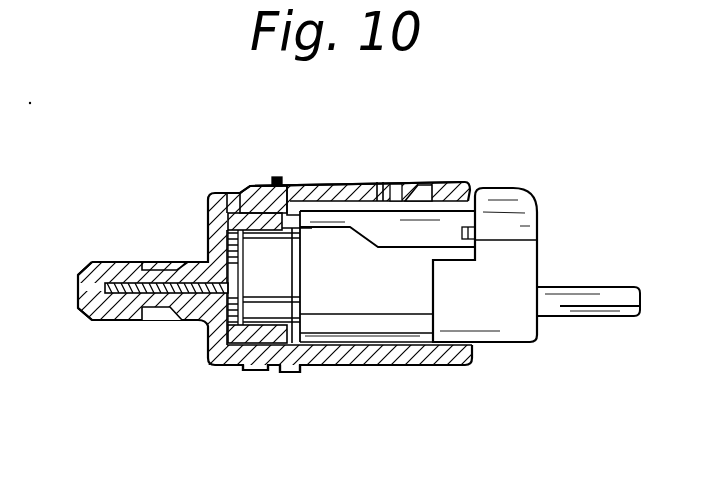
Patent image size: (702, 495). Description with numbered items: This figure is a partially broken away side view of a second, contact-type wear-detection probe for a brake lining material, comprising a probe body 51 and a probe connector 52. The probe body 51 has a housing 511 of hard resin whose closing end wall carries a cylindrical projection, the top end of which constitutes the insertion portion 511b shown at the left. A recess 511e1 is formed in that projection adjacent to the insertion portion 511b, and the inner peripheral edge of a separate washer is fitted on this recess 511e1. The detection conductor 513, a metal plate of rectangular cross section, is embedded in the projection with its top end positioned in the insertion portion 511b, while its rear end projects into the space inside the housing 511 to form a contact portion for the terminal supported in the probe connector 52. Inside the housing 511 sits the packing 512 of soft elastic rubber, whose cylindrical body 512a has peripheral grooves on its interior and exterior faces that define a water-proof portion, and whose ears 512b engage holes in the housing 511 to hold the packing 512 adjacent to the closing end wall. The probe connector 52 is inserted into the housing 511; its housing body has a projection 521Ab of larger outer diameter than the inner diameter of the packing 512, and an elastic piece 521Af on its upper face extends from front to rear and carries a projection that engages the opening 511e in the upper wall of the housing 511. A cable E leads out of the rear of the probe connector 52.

The probe body 51 is at (344, 176).
The housing 511 is at (430, 366).
The insertion portion 511b is at (90, 323).
The opening 511e is at (413, 188).
The recess 511e1 is at (157, 323).
The packing 512 is at (282, 180).
The cylindrical body 512a is at (248, 326).
The ears 512b is at (283, 371).
The detection conductor 513 is at (116, 272).
The probe connector 52 is at (507, 353).
The projection 521Ab is at (237, 212).
The elastic piece 521Af is at (393, 190).
The electric cable E is at (585, 286).